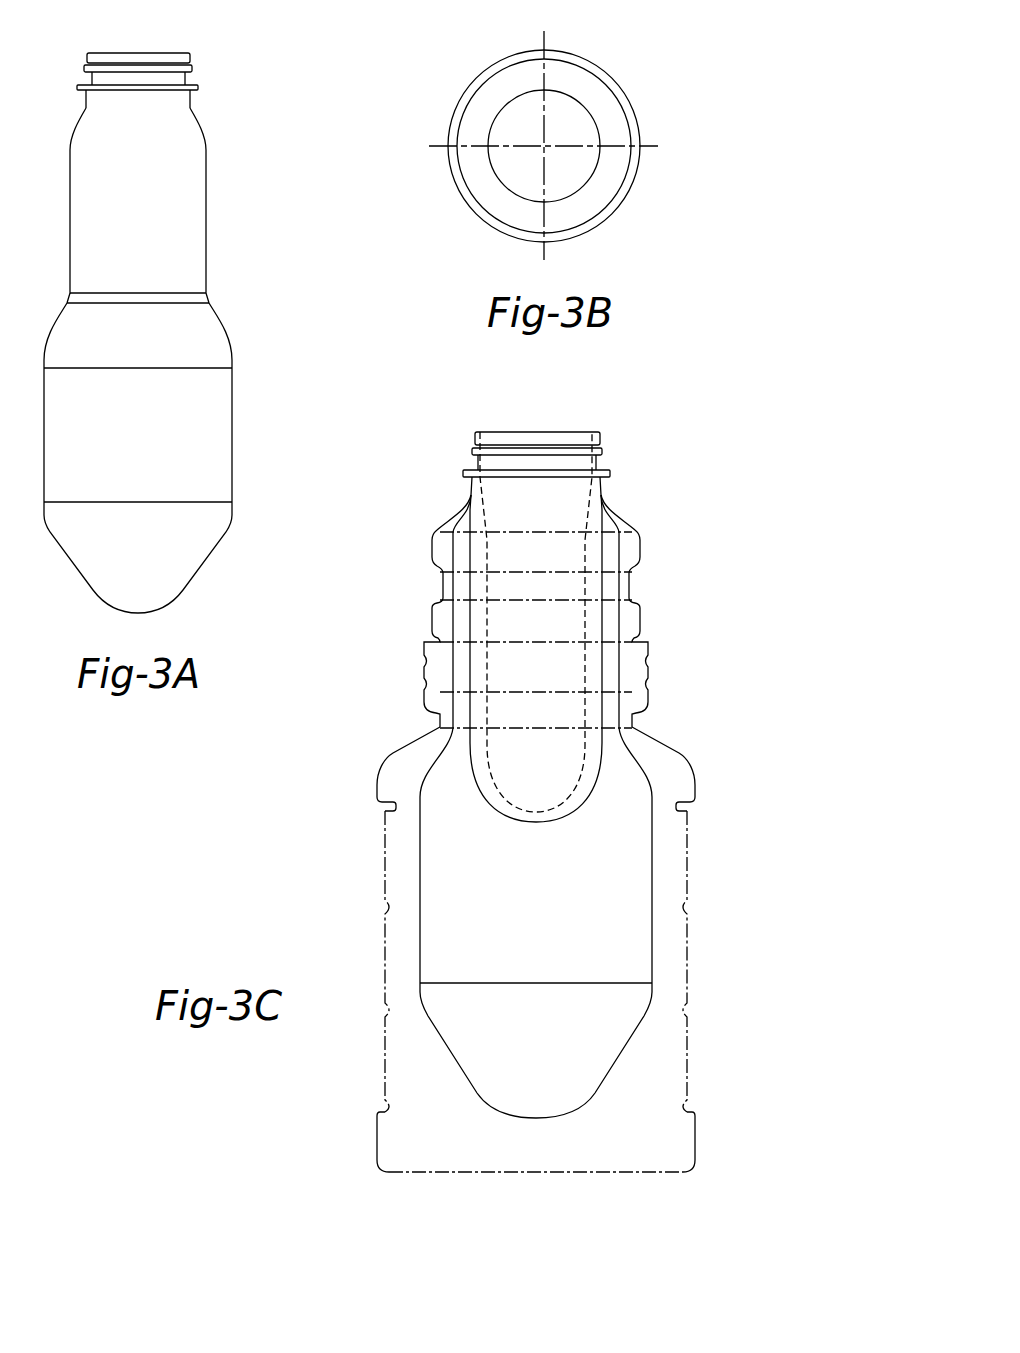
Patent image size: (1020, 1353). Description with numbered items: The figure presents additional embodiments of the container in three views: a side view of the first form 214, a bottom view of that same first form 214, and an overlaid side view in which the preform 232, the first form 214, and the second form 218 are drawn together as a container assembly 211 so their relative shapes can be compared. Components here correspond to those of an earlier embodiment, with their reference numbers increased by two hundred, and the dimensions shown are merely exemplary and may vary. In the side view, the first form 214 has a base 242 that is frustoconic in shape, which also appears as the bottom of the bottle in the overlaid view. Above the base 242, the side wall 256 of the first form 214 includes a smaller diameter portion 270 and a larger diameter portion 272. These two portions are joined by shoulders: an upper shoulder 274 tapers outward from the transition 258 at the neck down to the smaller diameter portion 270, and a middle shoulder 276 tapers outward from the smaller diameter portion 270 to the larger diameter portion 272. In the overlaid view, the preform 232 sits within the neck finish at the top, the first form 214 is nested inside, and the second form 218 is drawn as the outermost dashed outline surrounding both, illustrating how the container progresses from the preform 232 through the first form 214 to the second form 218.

In FIG. 3C, the container assembly 211 is at (597, 420).
In FIG. 3A, the first form 214 is at (182, 44).
In FIG. 3B, the first form 214 is at (610, 66).
In FIG. 3C, the first form 214 is at (658, 861).
In FIG. 3C, the second form 218 is at (392, 754).
In FIG. 3C, the preform 232 is at (606, 614).
In FIG. 3A, the base 242 is at (199, 583).
In FIG. 3B, the base 242 is at (608, 197).
In FIG. 3C, the base 242 is at (604, 1091).
In FIG. 3A, the side wall 256 is at (232, 420).
In FIG. 3A, the transition 258 is at (198, 106).
In FIG. 3A, the smaller diameter portion 270 is at (207, 210).
In FIG. 3A, the larger diameter portion 272 is at (232, 472).
In FIG. 3A, the upper shoulder 274 is at (203, 130).
In FIG. 3A, the middle shoulder 276 is at (231, 327).